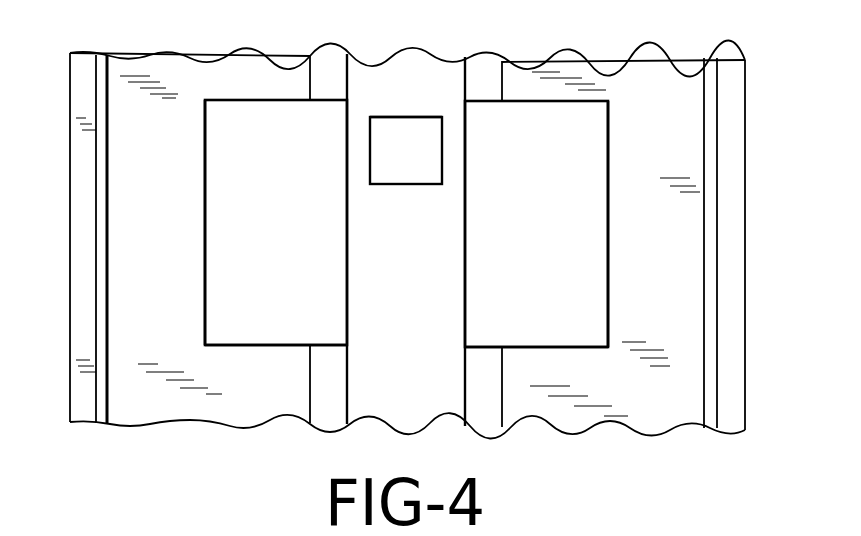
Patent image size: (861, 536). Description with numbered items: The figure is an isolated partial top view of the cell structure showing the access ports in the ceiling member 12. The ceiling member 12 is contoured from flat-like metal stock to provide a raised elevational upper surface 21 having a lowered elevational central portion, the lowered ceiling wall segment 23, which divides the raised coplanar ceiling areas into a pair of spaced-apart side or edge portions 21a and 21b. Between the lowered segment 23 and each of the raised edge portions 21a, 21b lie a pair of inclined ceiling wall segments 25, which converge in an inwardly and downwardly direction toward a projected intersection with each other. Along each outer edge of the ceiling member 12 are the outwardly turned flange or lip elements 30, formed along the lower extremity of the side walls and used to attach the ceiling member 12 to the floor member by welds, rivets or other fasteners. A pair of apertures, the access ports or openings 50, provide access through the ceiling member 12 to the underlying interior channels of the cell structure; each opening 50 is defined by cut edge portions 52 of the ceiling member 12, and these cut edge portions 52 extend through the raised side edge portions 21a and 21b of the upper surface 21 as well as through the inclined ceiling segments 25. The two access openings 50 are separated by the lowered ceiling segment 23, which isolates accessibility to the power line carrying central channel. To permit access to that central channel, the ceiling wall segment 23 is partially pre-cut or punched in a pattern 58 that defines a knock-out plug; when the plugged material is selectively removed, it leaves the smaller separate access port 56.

The ceiling member 12 is at (665, 392).
The upper surface 21 is at (182, 303).
The side edge portion 21a is at (210, 63).
The side edge portion 21b is at (620, 76).
The lowered ceiling wall segment 23 is at (431, 407).
The inclined ceiling wall segment 25 is at (330, 410).
The lip element 30 is at (82, 197).
The access port 50 is at (224, 204).
The cut edge portion 52 is at (200, 156).
The access port 56 is at (418, 168).
The partially pre-cut pattern 58 is at (418, 128).